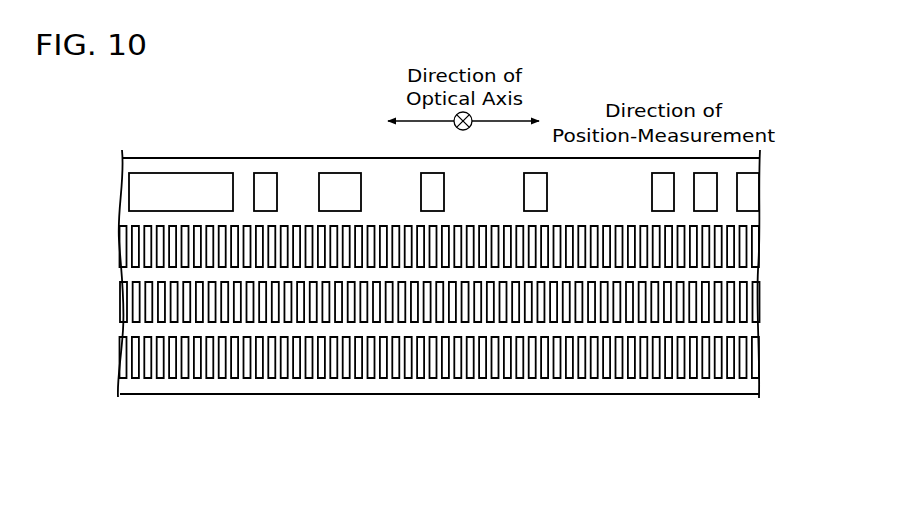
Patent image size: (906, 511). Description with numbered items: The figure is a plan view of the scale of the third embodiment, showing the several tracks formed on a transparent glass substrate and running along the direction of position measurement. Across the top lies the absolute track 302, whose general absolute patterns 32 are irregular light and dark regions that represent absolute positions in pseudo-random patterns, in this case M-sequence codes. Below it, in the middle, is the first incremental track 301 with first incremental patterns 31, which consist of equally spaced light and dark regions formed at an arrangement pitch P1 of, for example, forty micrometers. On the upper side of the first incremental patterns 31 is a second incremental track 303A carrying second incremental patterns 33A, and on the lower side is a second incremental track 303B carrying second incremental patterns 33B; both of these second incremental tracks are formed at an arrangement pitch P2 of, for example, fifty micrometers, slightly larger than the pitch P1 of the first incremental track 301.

The absolute patterns 32 is at (128, 194).
The absolute track 302 is at (754, 192).
The second incremental patterns 33A is at (441, 246).
The second incremental track 303A is at (746, 248).
The first incremental patterns 31 is at (449, 302).
The first incremental track 301 is at (757, 304).
The second incremental patterns 33B is at (442, 357).
The second incremental track 303B is at (748, 358).